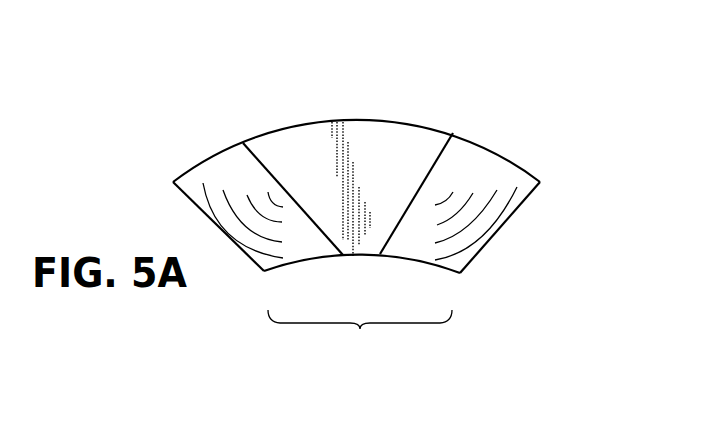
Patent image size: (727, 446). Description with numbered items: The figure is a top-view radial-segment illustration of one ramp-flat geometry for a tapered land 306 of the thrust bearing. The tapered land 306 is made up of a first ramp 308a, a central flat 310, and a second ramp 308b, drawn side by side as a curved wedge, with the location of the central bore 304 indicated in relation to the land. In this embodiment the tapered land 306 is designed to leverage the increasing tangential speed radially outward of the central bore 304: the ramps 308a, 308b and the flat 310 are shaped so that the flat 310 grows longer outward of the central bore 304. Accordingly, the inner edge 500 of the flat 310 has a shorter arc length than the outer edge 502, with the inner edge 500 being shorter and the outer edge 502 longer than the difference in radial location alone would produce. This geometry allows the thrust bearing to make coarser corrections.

The outer edge 502 is at (368, 120).
The central bore 304 is at (445, 268).
The first ramp 308a is at (210, 158).
The second ramp 308b is at (518, 162).
The flat 310 is at (450, 170).
The inner edge 500 is at (353, 257).
The tapered land 306 is at (360, 333).